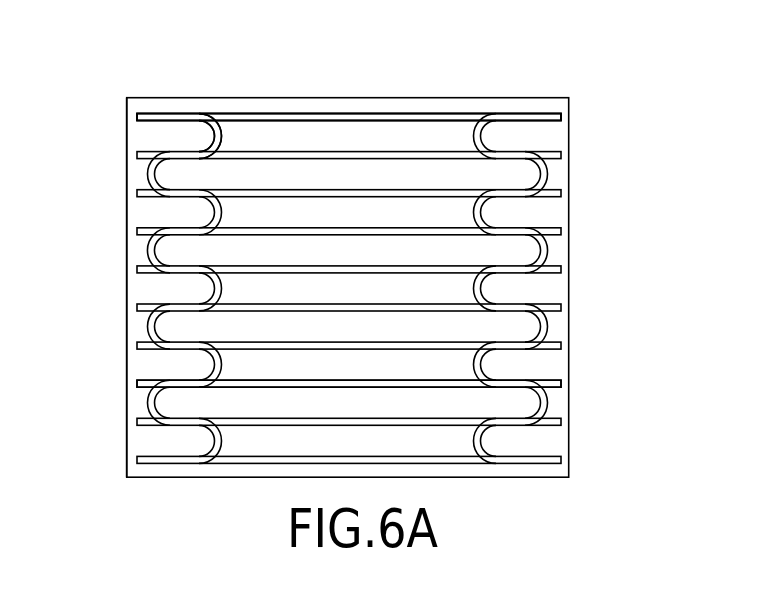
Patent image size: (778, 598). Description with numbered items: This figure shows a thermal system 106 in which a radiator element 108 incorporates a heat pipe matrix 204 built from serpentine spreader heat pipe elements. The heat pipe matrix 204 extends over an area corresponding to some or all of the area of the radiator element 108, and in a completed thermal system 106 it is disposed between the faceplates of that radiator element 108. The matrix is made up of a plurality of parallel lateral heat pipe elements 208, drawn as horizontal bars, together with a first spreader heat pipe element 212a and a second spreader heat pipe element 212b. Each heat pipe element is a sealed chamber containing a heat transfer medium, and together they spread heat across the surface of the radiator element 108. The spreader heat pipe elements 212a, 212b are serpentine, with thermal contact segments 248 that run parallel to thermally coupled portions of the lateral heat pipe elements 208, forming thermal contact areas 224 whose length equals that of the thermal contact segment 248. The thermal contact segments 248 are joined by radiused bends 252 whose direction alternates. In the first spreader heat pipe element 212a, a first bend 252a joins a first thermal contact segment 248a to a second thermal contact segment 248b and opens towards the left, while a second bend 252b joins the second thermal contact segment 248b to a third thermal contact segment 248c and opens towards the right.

The thermal system 106 is at (393, 95).
The radiator element 108 is at (127, 130).
The heat pipe matrix 204 is at (288, 112).
The lateral heat pipe element 208 is at (247, 114).
The first spreader heat pipe element 212a is at (148, 404).
The second spreader heat pipe element 212b is at (548, 174).
The thermal contact area 224 is at (178, 381).
The thermal contact segment 248 is at (513, 272).
The first thermal contact segment 248a is at (183, 113).
The second thermal contact segment 248b is at (178, 152).
The third thermal contact segment 248c is at (183, 197).
The bent segment 252 is at (548, 249).
The first bend 252a is at (230, 113).
The second bend 252b is at (148, 177).